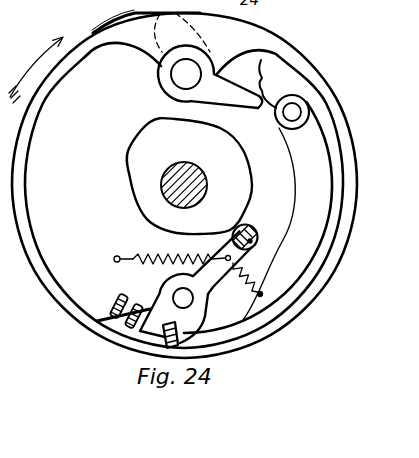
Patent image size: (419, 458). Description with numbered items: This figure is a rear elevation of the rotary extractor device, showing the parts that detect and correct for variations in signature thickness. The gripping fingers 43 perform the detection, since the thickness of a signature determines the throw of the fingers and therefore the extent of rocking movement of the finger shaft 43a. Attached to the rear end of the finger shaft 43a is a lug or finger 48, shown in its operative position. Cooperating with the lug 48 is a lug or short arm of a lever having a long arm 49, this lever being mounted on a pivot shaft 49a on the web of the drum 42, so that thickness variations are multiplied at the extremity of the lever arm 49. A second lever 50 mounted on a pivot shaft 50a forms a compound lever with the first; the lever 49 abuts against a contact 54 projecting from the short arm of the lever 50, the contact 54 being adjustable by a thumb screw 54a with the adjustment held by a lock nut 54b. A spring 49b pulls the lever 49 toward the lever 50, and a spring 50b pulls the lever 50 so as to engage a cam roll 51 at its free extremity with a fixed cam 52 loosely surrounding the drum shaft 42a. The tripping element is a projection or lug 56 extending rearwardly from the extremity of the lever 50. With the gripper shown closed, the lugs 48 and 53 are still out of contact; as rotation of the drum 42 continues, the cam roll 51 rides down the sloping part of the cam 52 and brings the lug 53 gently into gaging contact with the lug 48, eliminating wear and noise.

The drum 42 is at (183, 185).
The drum shaft 42a is at (173, 182).
The gripping fingers 43 is at (128, 20).
The finger shaft 43a is at (180, 76).
The lug or finger 48 is at (226, 91).
The lever arm 49 is at (258, 217).
The pivot shaft 49a is at (298, 113).
The spring 49b is at (231, 262).
The second lever 50 is at (196, 287).
The pivot shaft 50a is at (180, 298).
The spring 50b is at (146, 256).
The cam roll 51 is at (247, 224).
The fixed cam 52 is at (189, 176).
The lug 53 is at (259, 87).
The contact 54 is at (166, 340).
The thumb screw 54a is at (122, 308).
The lock nut 54b is at (124, 326).
The projection or lug 56 is at (253, 239).